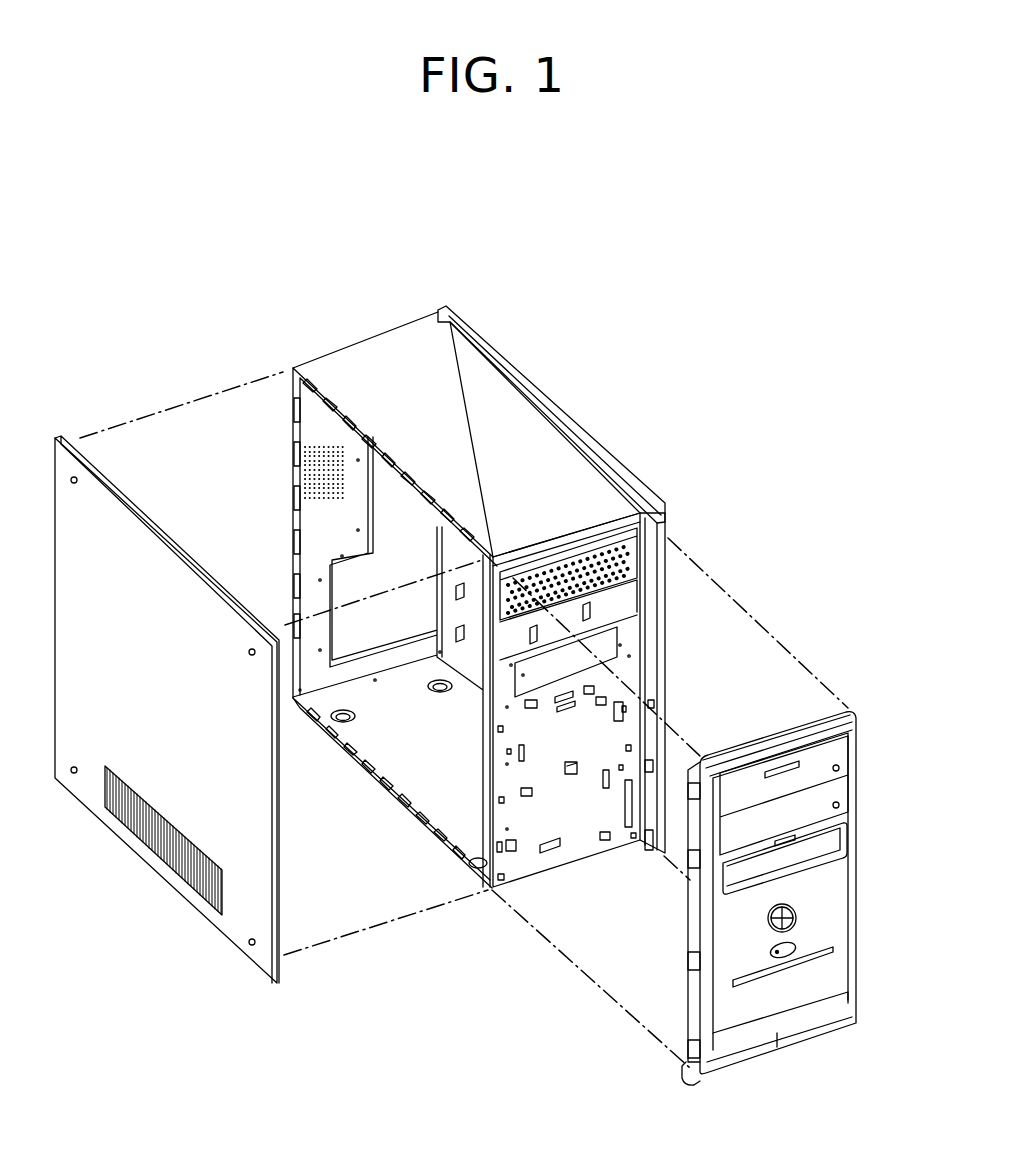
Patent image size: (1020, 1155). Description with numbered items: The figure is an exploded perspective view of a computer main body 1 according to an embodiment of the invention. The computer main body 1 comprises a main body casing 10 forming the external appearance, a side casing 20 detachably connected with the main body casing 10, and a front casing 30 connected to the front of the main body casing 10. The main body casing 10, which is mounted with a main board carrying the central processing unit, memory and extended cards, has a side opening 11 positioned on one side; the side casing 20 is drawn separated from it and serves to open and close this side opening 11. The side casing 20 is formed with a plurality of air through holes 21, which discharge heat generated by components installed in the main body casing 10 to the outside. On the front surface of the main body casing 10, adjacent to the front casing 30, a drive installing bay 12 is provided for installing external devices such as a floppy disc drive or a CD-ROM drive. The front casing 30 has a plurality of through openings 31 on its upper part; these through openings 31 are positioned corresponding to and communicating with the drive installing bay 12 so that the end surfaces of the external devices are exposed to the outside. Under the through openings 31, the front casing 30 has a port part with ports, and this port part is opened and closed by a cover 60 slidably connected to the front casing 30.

The computer main body 1 is at (802, 551).
The main body casing 10 is at (557, 437).
The side opening 11 is at (295, 630).
The drive installing bay 12 is at (612, 650).
The side casing 20 is at (62, 437).
The air through holes 21 is at (167, 853).
The front casing 30 is at (858, 722).
The through openings 31 is at (856, 835).
The cover 60 is at (848, 972).